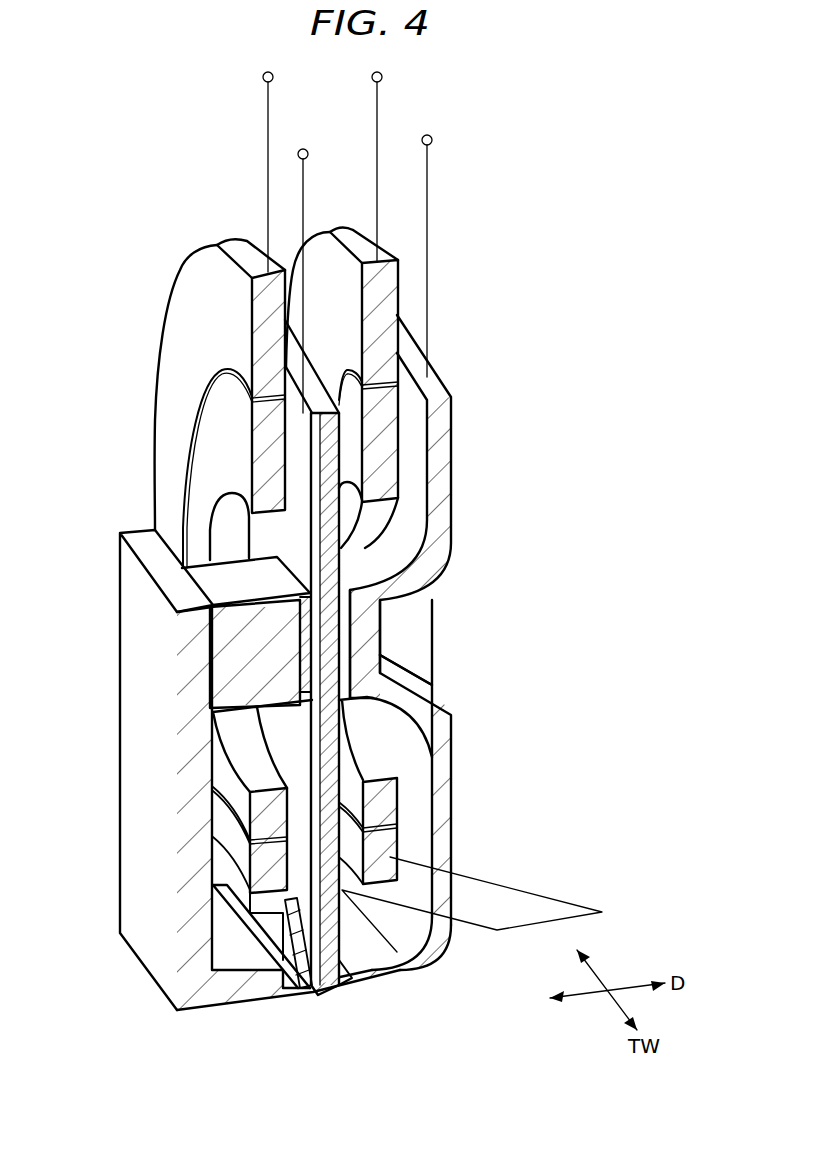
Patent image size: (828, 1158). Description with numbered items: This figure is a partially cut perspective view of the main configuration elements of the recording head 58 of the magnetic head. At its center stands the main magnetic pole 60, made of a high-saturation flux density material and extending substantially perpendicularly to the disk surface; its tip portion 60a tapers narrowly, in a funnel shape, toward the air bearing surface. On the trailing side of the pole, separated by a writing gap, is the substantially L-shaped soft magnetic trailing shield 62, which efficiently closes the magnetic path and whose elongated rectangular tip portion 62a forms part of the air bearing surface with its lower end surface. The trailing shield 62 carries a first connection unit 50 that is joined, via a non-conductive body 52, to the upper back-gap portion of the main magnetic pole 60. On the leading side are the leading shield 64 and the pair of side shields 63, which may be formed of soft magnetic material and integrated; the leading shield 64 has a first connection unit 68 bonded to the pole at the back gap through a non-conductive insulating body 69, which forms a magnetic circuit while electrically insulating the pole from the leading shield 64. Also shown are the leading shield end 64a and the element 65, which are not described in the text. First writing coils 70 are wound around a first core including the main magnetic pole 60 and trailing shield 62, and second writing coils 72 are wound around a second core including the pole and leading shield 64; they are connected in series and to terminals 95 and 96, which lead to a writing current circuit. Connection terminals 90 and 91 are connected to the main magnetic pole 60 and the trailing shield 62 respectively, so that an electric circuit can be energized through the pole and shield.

The first connection unit 50 is at (370, 640).
The non-conductive body 52 is at (353, 607).
The recording head 58 is at (487, 332).
The main magnetic pole 60 is at (320, 913).
The tip portion 60a is at (317, 992).
The trailing shield 62 is at (452, 793).
The tip portion 62a is at (410, 975).
The side shield 63 is at (272, 932).
The leading shield 64 is at (125, 810).
The leading shield end portion 64a is at (260, 990).
The spin torque oscillator 65 is at (330, 993).
The first connection unit 68 is at (227, 650).
The non-conductive body 69 is at (305, 663).
The first writing coils 70 is at (400, 280).
The second writing coils 72 is at (182, 290).
The connection terminal 90 is at (308, 154).
The connection terminal 91 is at (432, 140).
The terminal 95 is at (382, 77).
The terminal 96 is at (263, 77).